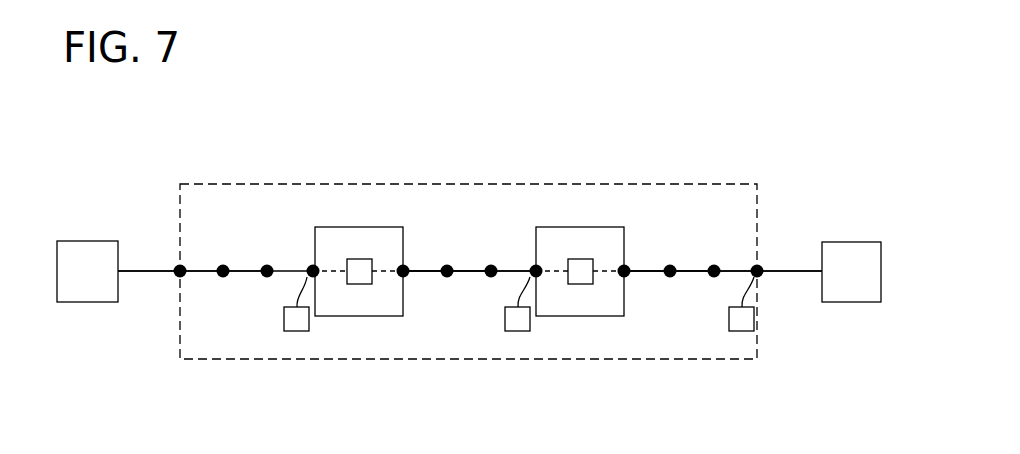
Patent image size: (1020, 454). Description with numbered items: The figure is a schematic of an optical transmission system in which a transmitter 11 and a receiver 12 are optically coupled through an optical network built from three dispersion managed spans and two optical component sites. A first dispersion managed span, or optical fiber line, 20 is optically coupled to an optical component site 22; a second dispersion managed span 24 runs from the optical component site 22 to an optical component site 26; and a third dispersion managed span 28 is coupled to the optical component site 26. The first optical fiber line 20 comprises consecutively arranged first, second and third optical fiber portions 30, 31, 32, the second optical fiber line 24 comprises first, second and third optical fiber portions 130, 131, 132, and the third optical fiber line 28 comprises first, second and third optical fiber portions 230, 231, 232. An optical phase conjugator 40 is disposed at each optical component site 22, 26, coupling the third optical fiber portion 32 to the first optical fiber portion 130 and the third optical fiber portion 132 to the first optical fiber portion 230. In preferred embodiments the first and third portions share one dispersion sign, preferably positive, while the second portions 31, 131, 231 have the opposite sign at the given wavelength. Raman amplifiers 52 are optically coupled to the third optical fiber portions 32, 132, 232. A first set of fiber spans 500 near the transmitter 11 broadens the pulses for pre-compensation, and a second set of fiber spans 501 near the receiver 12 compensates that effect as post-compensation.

The transmitter 11 is at (75, 241).
The receiver 12 is at (827, 242).
The first dispersion managed span 20 is at (209, 213).
The optical component site 22 is at (366, 201).
The second dispersion managed span 24 is at (471, 213).
The optical component site 26 is at (587, 201).
The third dispersion managed span 28 is at (683, 213).
The first optical fiber portion 30 is at (205, 271).
The second optical fiber portion 31 is at (244, 271).
The third optical fiber portion 32 is at (307, 271).
The optical phase conjugator 40 is at (350, 284).
The Raman amplifier 52 is at (295, 331).
The first optical fiber portion 130 is at (432, 271).
The second optical fiber portion 131 is at (470, 271).
The third optical fiber portion 132 is at (528, 271).
The first optical fiber portion 230 is at (648, 271).
The second optical fiber portion 231 is at (690, 271).
The third optical fiber portion 232 is at (753, 271).
The first set of fiber spans 500 is at (145, 271).
The second set of fiber spans 501 is at (790, 271).